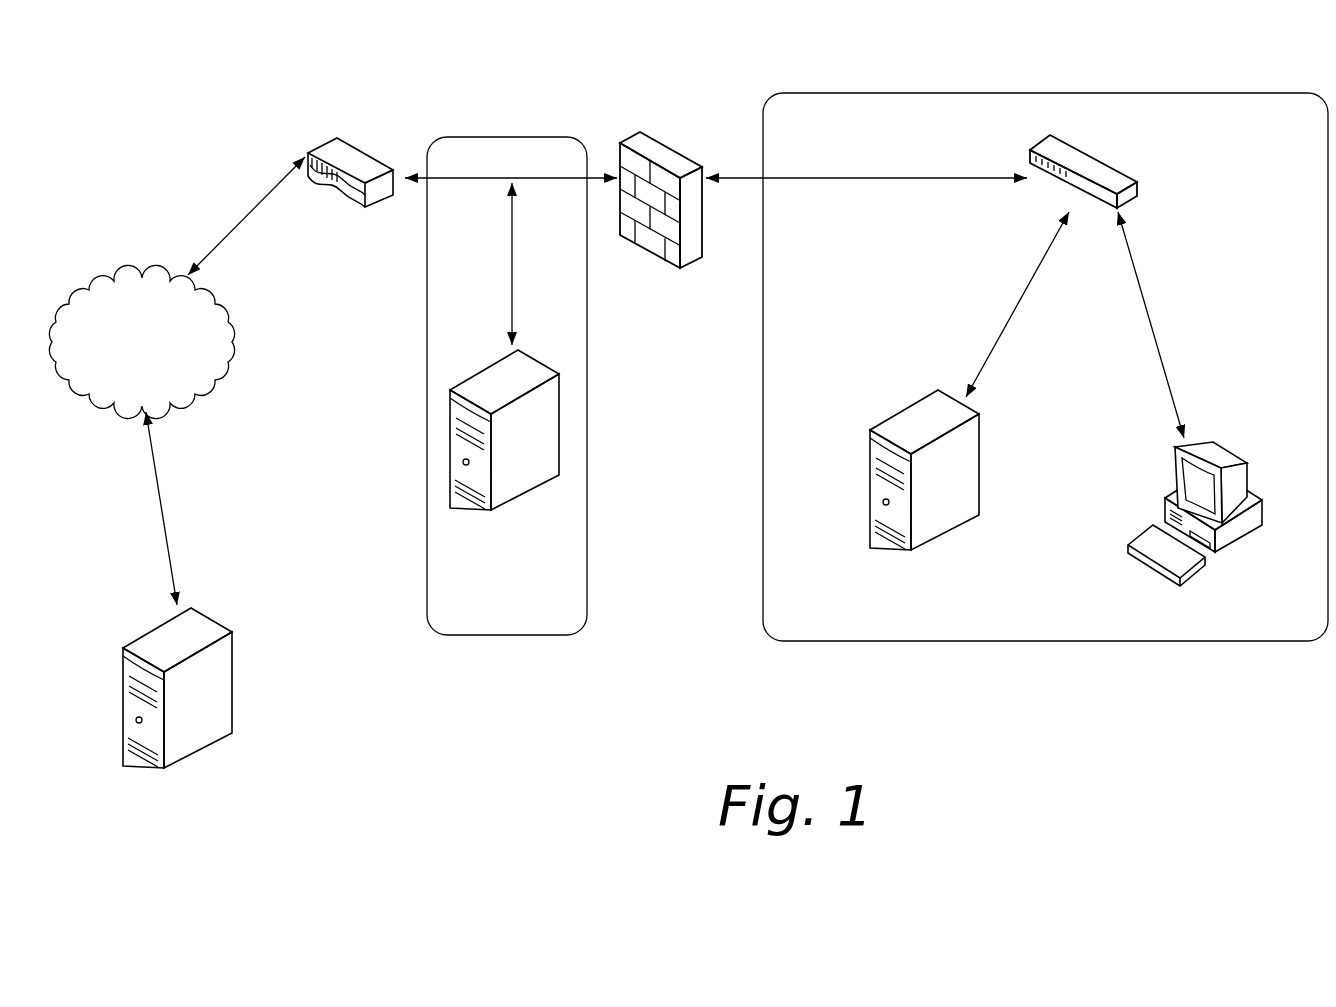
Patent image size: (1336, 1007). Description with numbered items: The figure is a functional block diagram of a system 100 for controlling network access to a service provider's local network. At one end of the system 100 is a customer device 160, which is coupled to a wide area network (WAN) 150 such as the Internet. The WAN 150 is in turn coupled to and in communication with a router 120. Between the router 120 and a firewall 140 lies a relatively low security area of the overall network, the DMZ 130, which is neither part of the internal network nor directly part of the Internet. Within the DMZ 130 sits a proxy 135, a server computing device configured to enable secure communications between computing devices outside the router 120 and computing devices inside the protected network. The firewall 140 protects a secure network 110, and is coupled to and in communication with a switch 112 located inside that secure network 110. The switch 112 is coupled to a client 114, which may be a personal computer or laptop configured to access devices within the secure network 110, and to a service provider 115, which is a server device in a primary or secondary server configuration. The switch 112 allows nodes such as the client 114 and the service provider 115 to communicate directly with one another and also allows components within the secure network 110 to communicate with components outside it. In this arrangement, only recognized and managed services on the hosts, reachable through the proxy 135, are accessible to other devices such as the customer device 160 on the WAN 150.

The system 100 is at (615, 712).
The secure network 110 is at (818, 641).
The switch 112 is at (1110, 163).
The client 114 is at (1203, 440).
The service provider 115 is at (890, 418).
The router 120 is at (362, 148).
The DMZ 130 is at (592, 442).
The proxy 135 is at (478, 370).
The firewall 140 is at (653, 142).
The wide area network (WAN) 150 is at (225, 380).
The customer device 160 is at (233, 640).